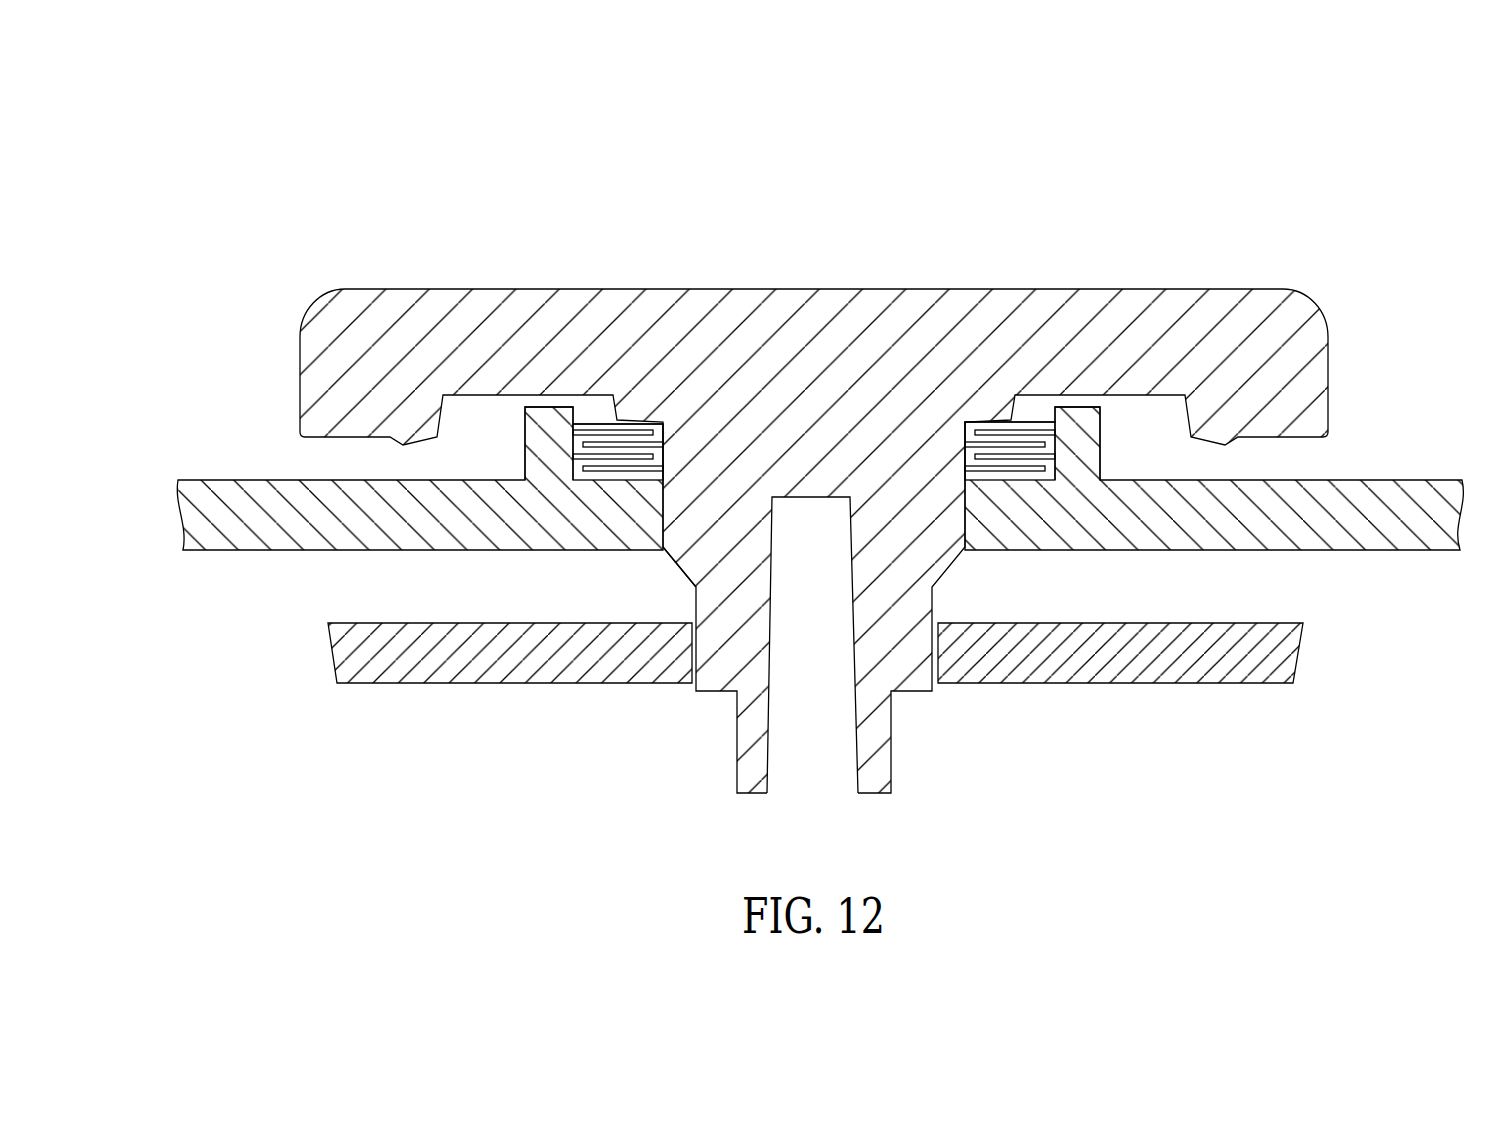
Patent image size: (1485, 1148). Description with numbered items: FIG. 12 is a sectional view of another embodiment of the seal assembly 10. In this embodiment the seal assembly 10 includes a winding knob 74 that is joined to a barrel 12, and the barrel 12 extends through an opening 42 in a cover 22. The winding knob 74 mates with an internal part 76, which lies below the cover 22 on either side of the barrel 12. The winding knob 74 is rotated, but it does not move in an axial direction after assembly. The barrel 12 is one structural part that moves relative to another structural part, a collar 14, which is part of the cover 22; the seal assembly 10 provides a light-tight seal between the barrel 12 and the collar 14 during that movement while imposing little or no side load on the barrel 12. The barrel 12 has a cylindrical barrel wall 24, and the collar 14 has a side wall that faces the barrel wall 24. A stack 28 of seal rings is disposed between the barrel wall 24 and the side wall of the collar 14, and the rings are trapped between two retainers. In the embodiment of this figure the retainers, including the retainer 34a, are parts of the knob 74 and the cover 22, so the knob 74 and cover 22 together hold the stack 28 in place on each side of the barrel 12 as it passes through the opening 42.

The seal assembly 10 is at (820, 450).
The barrel 12 is at (812, 497).
The collar 14 is at (525, 457).
The cover 22 is at (213, 480).
The barrel wall 24 is at (674, 562).
The stack 28 is at (941, 440).
The retainer 34a is at (630, 423).
The opening 42 is at (1008, 568).
The winding knob 74 is at (990, 289).
The internal part 76 is at (397, 685).